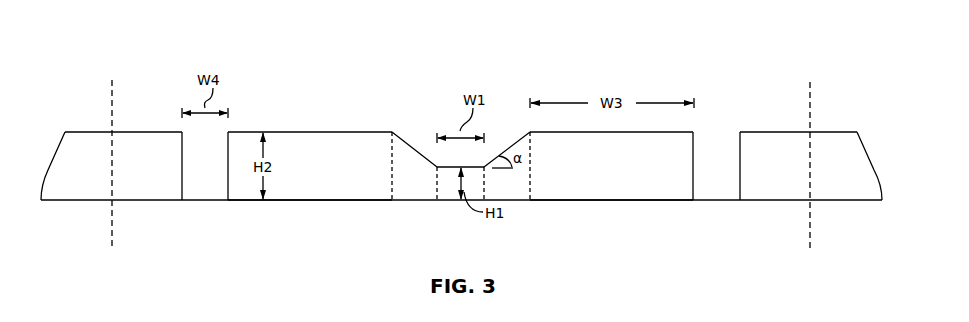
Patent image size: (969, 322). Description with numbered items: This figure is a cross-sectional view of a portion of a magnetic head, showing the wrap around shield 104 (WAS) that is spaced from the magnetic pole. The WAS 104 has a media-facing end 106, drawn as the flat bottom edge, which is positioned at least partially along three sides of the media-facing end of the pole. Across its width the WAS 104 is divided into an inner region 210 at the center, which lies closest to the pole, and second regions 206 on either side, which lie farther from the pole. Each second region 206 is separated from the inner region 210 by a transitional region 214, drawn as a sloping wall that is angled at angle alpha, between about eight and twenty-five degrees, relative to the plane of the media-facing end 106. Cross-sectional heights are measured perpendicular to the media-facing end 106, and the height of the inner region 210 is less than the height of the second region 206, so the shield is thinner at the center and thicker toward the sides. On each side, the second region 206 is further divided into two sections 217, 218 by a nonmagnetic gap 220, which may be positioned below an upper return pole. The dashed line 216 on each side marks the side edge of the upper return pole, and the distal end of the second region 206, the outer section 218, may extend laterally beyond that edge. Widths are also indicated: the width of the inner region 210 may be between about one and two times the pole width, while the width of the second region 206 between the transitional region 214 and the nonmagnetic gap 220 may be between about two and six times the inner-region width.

The wrap around shield 104 is at (370, 132).
The media-facing end 106 is at (351, 214).
The second region 206 is at (161, 175).
The inner region 210 is at (455, 185).
The transitional region 214 is at (415, 142).
The dashed line 216 is at (112, 83).
The section 217 is at (310, 201).
The section 218 is at (88, 201).
The nonmagnetic gap 220 is at (207, 161).